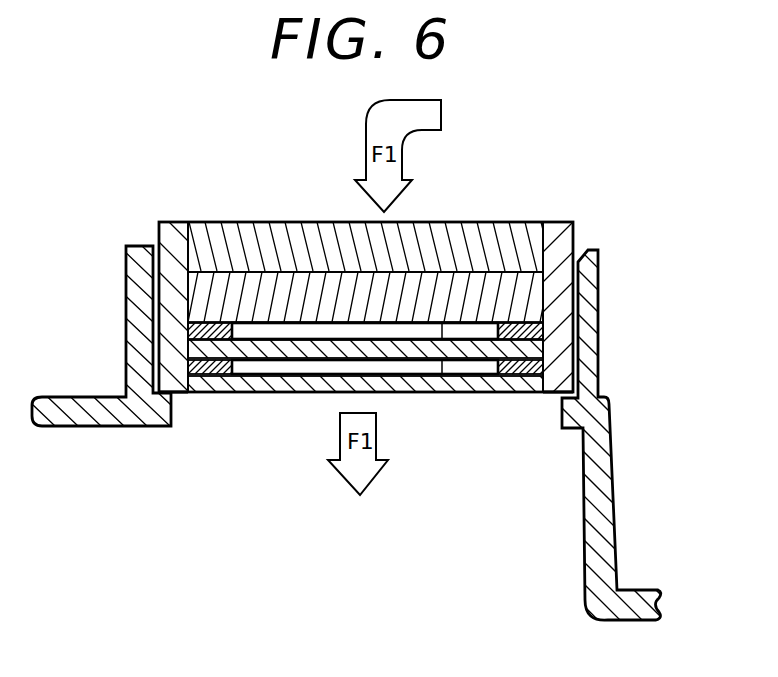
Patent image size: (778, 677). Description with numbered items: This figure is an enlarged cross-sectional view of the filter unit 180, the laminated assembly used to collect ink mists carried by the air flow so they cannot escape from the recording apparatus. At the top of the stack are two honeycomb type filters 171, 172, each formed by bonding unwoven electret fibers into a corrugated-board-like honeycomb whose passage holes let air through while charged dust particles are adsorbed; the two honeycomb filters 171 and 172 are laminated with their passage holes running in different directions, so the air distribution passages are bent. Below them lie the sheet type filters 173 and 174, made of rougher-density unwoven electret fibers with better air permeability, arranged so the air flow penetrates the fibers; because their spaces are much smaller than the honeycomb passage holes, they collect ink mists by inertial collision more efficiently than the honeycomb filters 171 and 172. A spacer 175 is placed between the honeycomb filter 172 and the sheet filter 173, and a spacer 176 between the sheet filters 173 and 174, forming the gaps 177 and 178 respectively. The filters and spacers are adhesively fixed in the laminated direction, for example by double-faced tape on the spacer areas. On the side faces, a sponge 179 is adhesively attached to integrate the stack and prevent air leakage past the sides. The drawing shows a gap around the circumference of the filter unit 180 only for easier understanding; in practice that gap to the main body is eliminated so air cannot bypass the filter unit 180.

The honeycomb type filter 171 is at (478, 243).
The honeycomb type filter 172 is at (516, 290).
The sheet type filter 173 is at (410, 353).
The sheet type filter 174 is at (467, 395).
The spacer 175 is at (190, 328).
The spacer 176 is at (190, 362).
The gap 177 is at (253, 333).
The gap 178 is at (285, 368).
The sponge 179 is at (178, 393).
The filter unit 180 is at (616, 292).